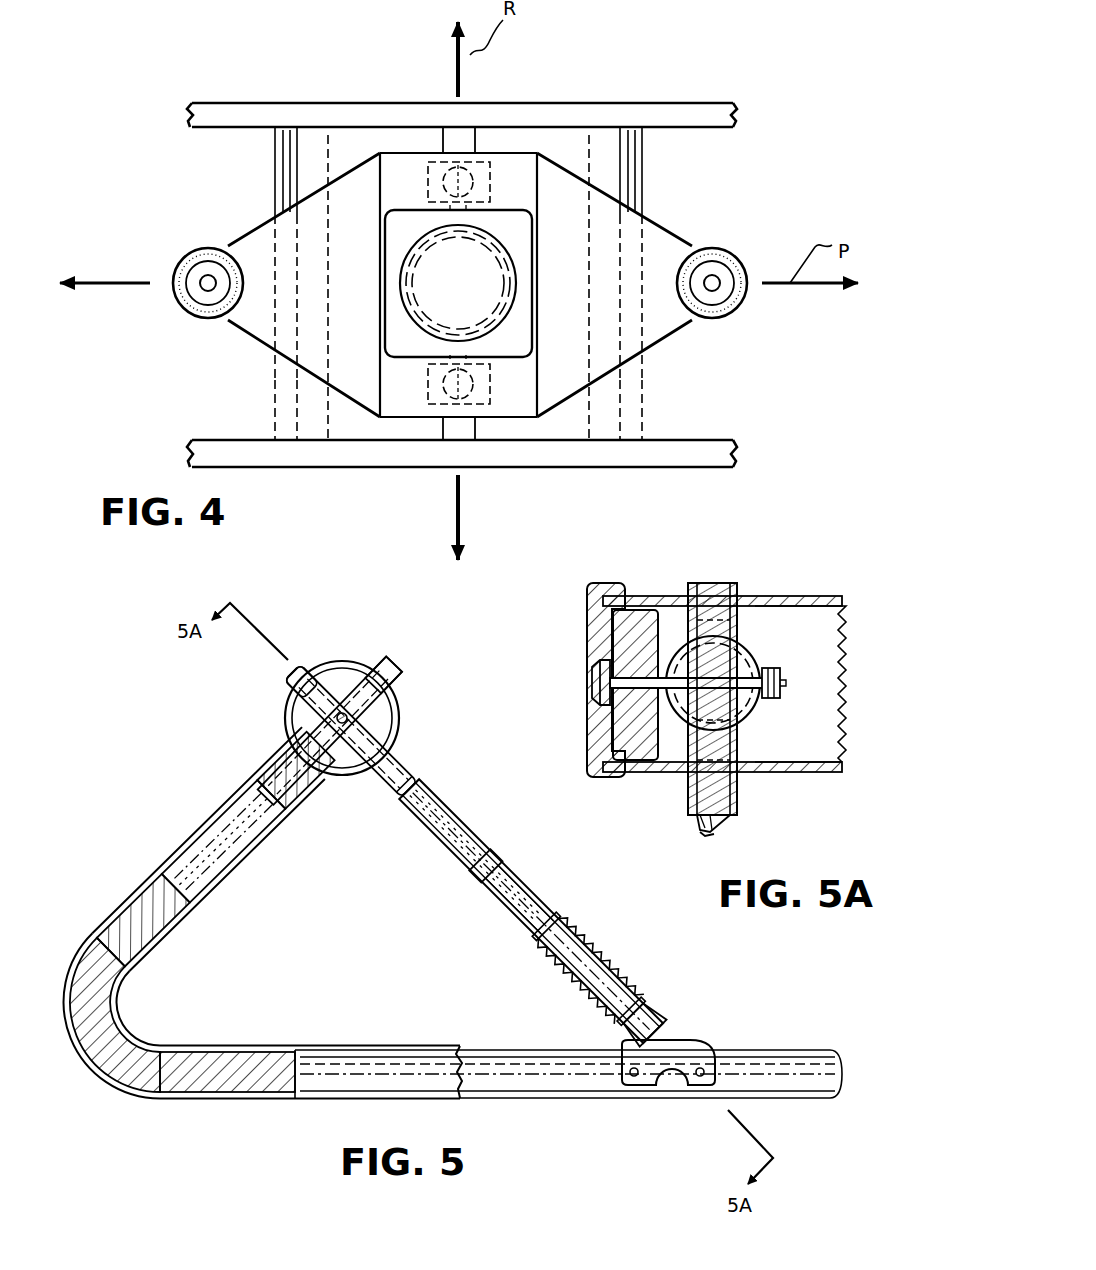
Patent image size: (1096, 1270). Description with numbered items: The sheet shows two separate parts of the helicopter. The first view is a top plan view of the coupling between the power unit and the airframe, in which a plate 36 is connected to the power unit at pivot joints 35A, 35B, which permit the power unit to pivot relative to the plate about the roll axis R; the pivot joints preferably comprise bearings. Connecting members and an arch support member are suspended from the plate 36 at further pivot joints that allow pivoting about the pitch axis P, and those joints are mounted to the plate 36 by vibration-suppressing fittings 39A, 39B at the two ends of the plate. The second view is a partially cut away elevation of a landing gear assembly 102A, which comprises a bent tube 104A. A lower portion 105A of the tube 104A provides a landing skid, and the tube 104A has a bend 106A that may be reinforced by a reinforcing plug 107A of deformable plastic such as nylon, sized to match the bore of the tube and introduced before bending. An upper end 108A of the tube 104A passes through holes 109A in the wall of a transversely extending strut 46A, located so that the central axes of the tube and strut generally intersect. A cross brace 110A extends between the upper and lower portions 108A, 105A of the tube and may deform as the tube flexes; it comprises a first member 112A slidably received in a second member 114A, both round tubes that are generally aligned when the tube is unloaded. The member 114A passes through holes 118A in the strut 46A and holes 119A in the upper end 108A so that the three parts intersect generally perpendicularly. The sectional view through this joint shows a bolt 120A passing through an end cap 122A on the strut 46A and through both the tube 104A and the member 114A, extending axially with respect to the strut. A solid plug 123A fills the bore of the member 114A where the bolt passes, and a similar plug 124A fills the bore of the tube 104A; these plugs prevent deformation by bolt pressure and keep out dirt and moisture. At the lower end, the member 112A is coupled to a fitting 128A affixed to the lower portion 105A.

In FIG. 4, the pivot joint 35A is at (490, 398).
In FIG. 4, the pivot joint 35B is at (487, 173).
In FIG. 4, the plate 36 is at (663, 242).
In FIG. 4, the vibration-suppressing fitting 39A is at (195, 312).
In FIG. 4, the vibration-suppressing fitting 39B is at (718, 316).
In FIG. 5, the transversely extending strut 46A is at (340, 664).
In FIG. 5A, the transversely extending strut 46A is at (838, 598).
In FIG. 5, the landing gear assembly 102A is at (160, 800).
In FIG. 5, the bent tube 104A is at (296, 916).
In FIG. 5A, the bent tube 104A is at (760, 660).
In FIG. 5, the lower portion 105A is at (488, 1085).
In FIG. 5, the bend 106A is at (80, 1060).
In FIG. 5, the reinforcing plug 107A is at (140, 940).
In FIG. 5, the upper end 108A is at (260, 822).
In FIG. 5A, the upper end 108A is at (752, 640).
In FIG. 5, the holes 109A is at (395, 690).
In FIG. 5, the cross brace 110A is at (481, 809).
In FIG. 5, the first member 112A is at (588, 968).
In FIG. 5, the second member 114A is at (513, 893).
In FIG. 5, the holes 118A is at (351, 731).
In FIG. 5A, the holes 118A is at (714, 600).
In FIG. 5, the holes 119A is at (333, 690).
In FIG. 5A, the holes 119A is at (740, 610).
In FIG. 5A, the bolt 120A is at (630, 680).
In FIG. 5A, the end cap 122A is at (640, 720).
In FIG. 5, the solid plug 123A is at (406, 786).
In FIG. 5A, the solid plug 123A is at (720, 836).
In FIG. 5, the plug 124A is at (378, 684).
In FIG. 5A, the plug 124A is at (760, 720).
In FIG. 5, the fitting 128A is at (672, 1042).